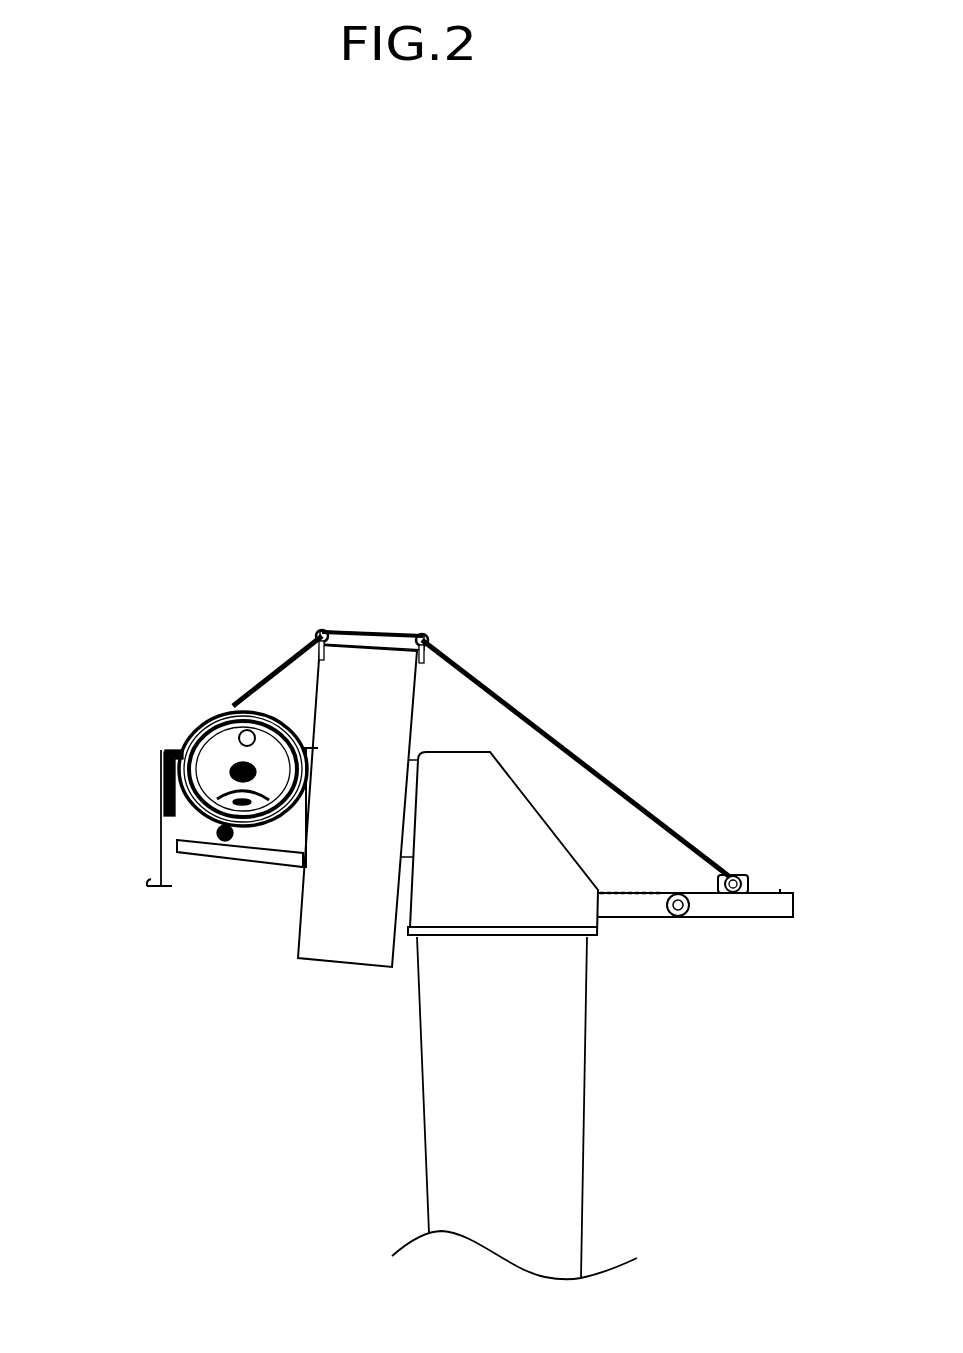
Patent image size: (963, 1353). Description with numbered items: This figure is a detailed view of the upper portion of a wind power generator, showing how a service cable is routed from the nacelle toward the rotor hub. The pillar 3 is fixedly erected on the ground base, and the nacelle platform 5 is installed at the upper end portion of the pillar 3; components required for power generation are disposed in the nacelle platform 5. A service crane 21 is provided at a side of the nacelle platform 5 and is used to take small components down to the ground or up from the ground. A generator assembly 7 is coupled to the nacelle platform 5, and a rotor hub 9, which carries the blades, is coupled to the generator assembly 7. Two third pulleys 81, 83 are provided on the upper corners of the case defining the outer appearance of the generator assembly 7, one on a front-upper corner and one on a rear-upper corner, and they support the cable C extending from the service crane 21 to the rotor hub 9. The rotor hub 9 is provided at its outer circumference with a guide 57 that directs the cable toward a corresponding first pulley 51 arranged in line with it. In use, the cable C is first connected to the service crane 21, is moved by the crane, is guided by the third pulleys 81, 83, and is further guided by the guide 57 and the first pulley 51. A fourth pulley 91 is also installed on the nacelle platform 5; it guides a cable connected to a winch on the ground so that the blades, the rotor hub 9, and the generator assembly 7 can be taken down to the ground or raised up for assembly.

The pillar 3 is at (548, 1108).
The nacelle platform 5 is at (512, 770).
The generator assembly 7 is at (372, 729).
The rotor hub 9 is at (221, 862).
The service crane 21 is at (786, 838).
The first pulley 51 is at (103, 803).
The guide 57 is at (220, 716).
The third pulley 81 is at (293, 550).
The third pulley 83 is at (496, 584).
The fourth pulley 91 is at (725, 963).
The cable c is at (576, 731).